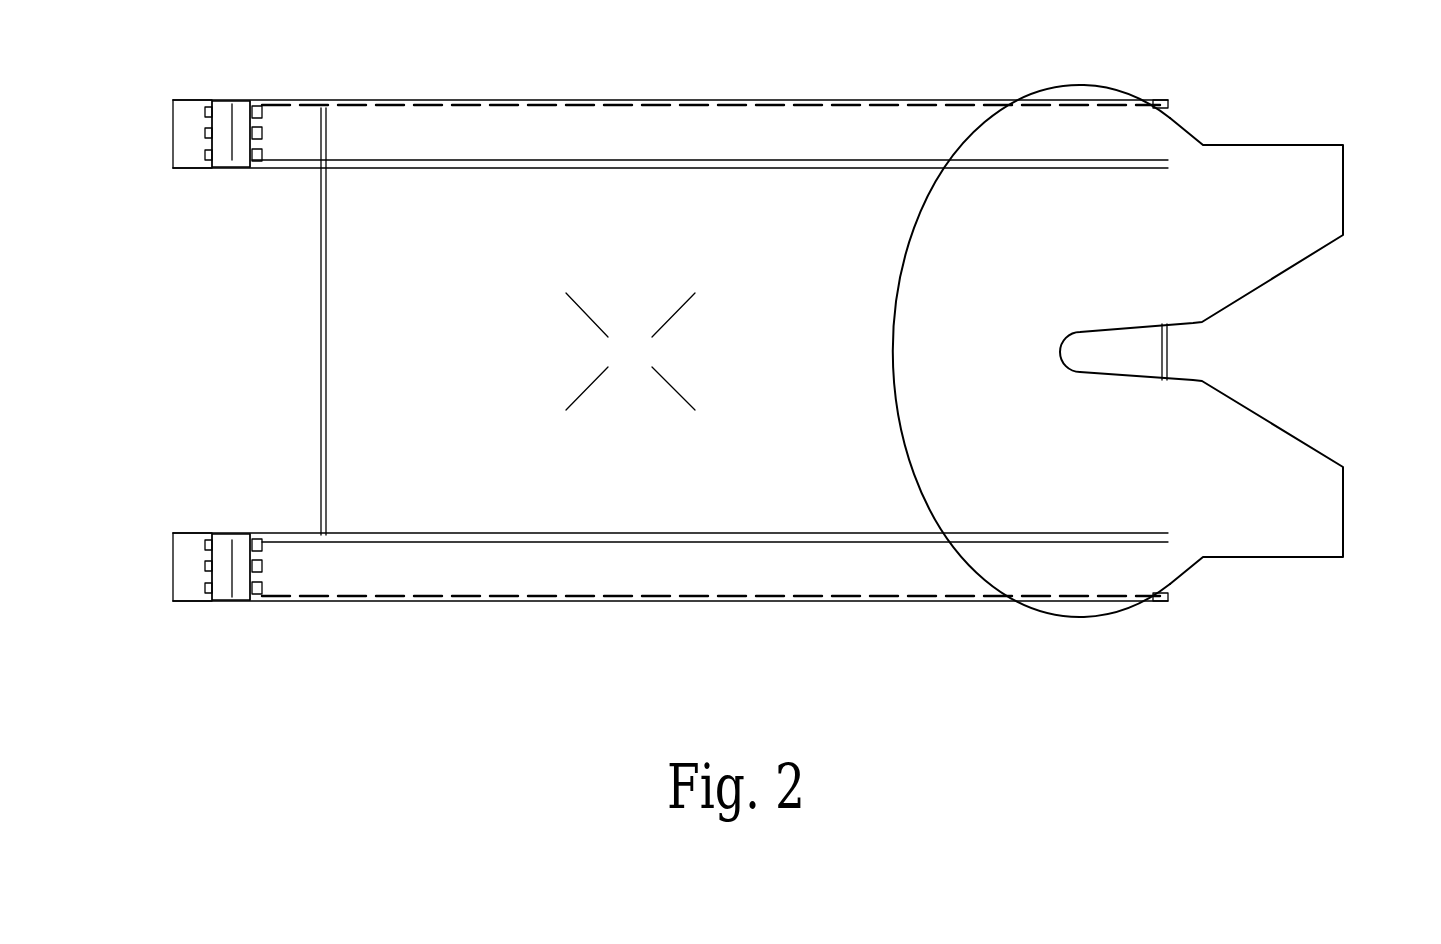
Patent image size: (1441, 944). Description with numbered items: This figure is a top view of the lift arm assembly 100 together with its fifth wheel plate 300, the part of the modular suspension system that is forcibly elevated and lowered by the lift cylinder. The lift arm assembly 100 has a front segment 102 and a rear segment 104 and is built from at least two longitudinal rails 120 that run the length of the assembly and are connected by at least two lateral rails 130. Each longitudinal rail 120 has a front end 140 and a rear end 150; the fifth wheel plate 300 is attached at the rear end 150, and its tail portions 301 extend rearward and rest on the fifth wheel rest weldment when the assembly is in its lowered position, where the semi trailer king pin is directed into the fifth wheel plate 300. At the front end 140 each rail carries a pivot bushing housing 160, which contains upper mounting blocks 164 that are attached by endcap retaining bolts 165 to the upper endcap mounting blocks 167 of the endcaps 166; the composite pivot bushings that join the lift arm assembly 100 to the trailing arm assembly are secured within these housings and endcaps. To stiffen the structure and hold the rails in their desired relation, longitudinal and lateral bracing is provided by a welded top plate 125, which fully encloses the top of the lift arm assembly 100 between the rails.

The lift arm assembly 100 is at (630, 262).
The front segment 102 is at (291, 130).
The second end of rail 104 is at (943, 147).
The longitudinal rails 120 is at (663, 160).
The welded top plate 125 is at (630, 351).
The lateral rails 130 is at (317, 352).
The front end 140 is at (175, 175).
The rear end 150 is at (1170, 95).
The pivot bushing housings 160 is at (263, 168).
The upper mounting blocks 164 is at (243, 110).
The endcap retaining bolts 165 is at (205, 155).
The endcaps 166 is at (178, 105).
The upper endcap mounting blocks 167 is at (224, 110).
The fifth wheel plate 300 is at (1078, 175).
The tail portions 301 is at (1330, 198).